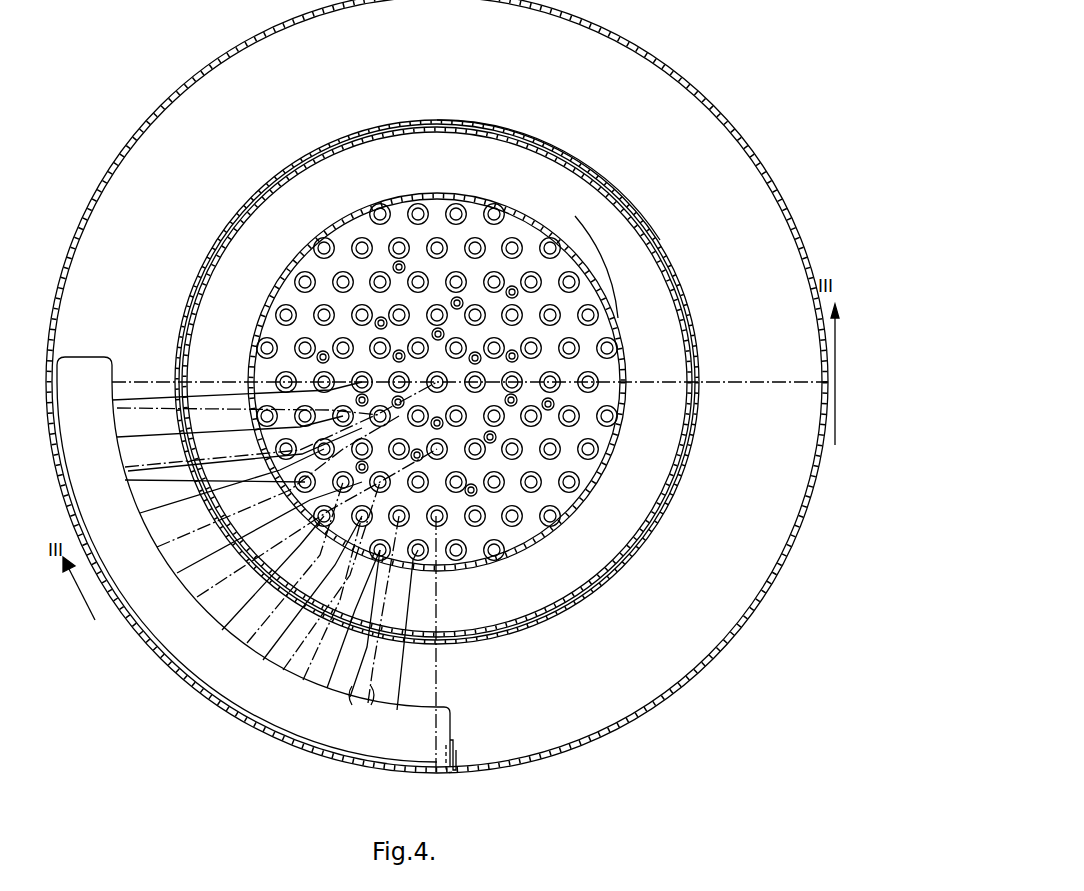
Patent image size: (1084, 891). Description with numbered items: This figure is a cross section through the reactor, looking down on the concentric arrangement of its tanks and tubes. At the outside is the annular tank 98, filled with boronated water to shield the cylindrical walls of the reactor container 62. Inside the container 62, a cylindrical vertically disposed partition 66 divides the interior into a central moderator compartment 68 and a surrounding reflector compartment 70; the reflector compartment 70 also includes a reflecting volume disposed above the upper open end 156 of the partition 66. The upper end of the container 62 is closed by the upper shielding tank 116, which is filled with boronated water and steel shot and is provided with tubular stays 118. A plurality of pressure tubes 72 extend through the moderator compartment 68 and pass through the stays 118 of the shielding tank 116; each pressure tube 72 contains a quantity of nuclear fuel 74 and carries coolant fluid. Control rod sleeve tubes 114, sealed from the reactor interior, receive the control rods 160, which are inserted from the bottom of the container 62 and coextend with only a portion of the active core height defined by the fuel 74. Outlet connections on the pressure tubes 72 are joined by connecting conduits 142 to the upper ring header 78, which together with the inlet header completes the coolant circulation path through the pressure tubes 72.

The annular tank 98 is at (194, 79).
The reactor container 62 is at (272, 189).
The reflector compartment 70 is at (668, 297).
The upper shielding tank 116 is at (562, 174).
The partition 66 is at (627, 362).
The moderator compartment 68 is at (519, 228).
The upper open end of partition 156 is at (588, 283).
The pressure tube 72 is at (372, 212).
The tubular stay 118 is at (297, 278).
The nuclear fuel 74 is at (277, 313).
The control rod sleeve tube 114 is at (393, 268).
The control rod 160 is at (458, 298).
The upper ring header 78 is at (274, 730).
The connecting conduit 142 is at (369, 704).